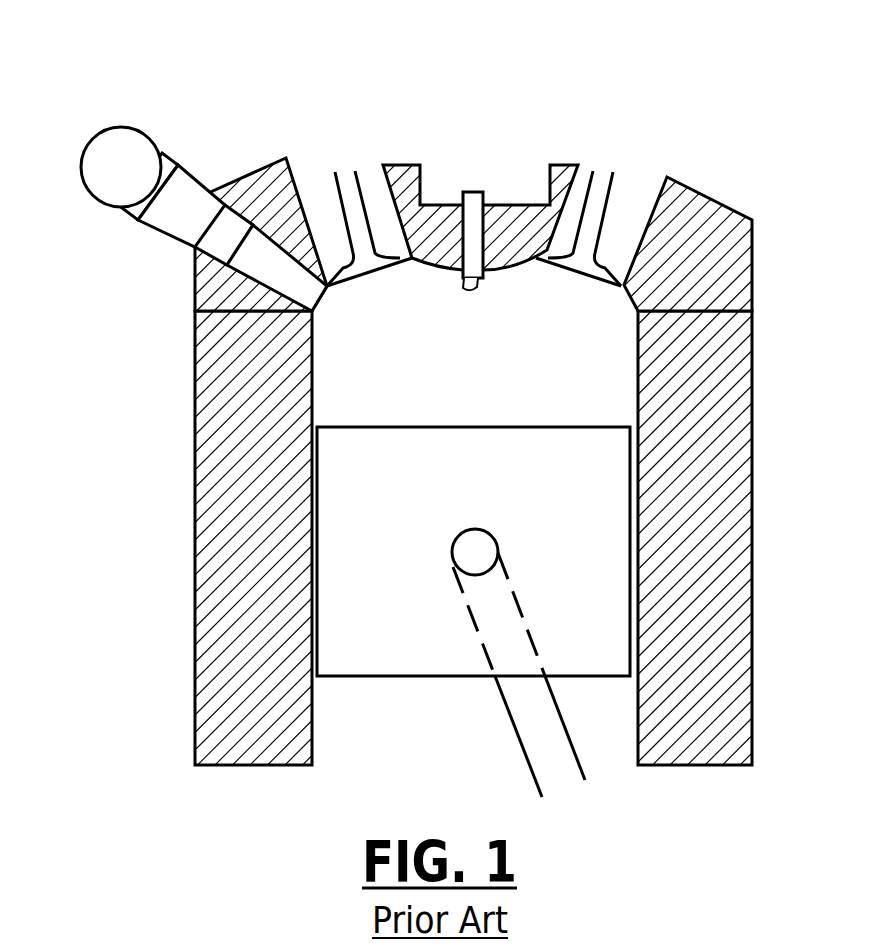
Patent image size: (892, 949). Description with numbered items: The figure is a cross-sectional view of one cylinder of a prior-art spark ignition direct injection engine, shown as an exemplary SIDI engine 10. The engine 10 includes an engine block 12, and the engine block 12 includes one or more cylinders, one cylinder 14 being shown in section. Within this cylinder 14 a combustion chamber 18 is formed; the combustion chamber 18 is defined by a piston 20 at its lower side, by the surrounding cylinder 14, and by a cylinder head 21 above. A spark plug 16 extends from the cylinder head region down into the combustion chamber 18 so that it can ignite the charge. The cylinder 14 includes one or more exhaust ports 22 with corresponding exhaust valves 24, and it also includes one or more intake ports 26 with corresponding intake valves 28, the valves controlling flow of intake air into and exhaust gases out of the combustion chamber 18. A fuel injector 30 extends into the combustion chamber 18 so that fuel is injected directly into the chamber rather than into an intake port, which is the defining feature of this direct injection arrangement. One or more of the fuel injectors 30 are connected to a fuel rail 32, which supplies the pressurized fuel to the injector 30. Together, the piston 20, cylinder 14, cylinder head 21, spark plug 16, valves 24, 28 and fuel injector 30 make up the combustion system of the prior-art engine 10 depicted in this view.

The SIDI engine 10 is at (659, 90).
The engine block 12 is at (195, 540).
The cylinder 14 is at (643, 350).
The spark plug 16 is at (472, 190).
The combustion chamber 18 is at (493, 377).
The piston 20 is at (428, 678).
The cylinder head 21 is at (195, 287).
The exhaust port 22 is at (645, 180).
The exhaust valve 24 is at (590, 176).
The intake port 26 is at (302, 150).
The intake valve 28 is at (359, 172).
The fuel injector 30 is at (167, 240).
The fuel rail 32 is at (110, 127).